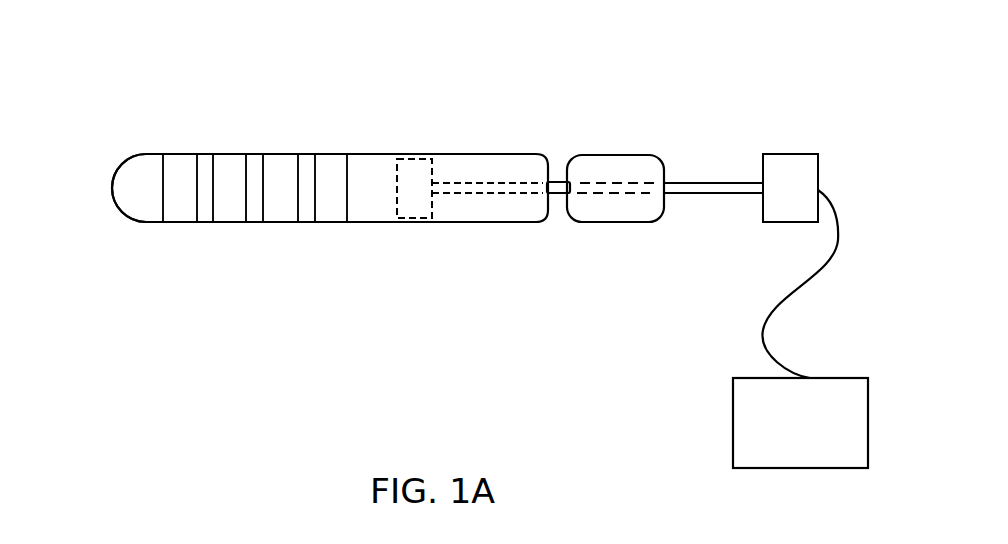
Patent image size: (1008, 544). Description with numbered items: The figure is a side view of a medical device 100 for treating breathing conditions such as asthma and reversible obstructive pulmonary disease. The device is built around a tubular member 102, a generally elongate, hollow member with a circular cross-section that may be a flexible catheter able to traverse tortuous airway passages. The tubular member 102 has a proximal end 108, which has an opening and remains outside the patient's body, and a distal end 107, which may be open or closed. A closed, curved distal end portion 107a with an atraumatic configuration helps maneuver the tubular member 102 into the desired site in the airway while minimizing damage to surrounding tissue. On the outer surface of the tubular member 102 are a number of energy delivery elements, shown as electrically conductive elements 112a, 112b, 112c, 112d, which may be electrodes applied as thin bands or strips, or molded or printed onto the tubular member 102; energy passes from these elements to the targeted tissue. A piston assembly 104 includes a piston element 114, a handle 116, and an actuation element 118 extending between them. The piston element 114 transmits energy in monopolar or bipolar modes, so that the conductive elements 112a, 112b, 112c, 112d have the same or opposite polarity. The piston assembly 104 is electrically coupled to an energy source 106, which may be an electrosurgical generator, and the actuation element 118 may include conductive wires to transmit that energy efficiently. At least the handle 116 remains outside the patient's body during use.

The medical device 100 is at (462, 360).
The tubular member 102 is at (362, 292).
The piston assembly 104 is at (697, 137).
The energy source 106 is at (800, 329).
The distal end 107 is at (170, 275).
The distal end portion 107a is at (108, 195).
The proximal end 108 is at (648, 258).
The electrically conductive element 112a is at (177, 173).
The electrically conductive element 112b is at (231, 190).
The electrically conductive element 112c is at (280, 190).
The electrically conductive element 112d is at (328, 190).
The piston element 114 is at (415, 188).
The handle 116 is at (788, 188).
The actuation element 118 is at (557, 181).